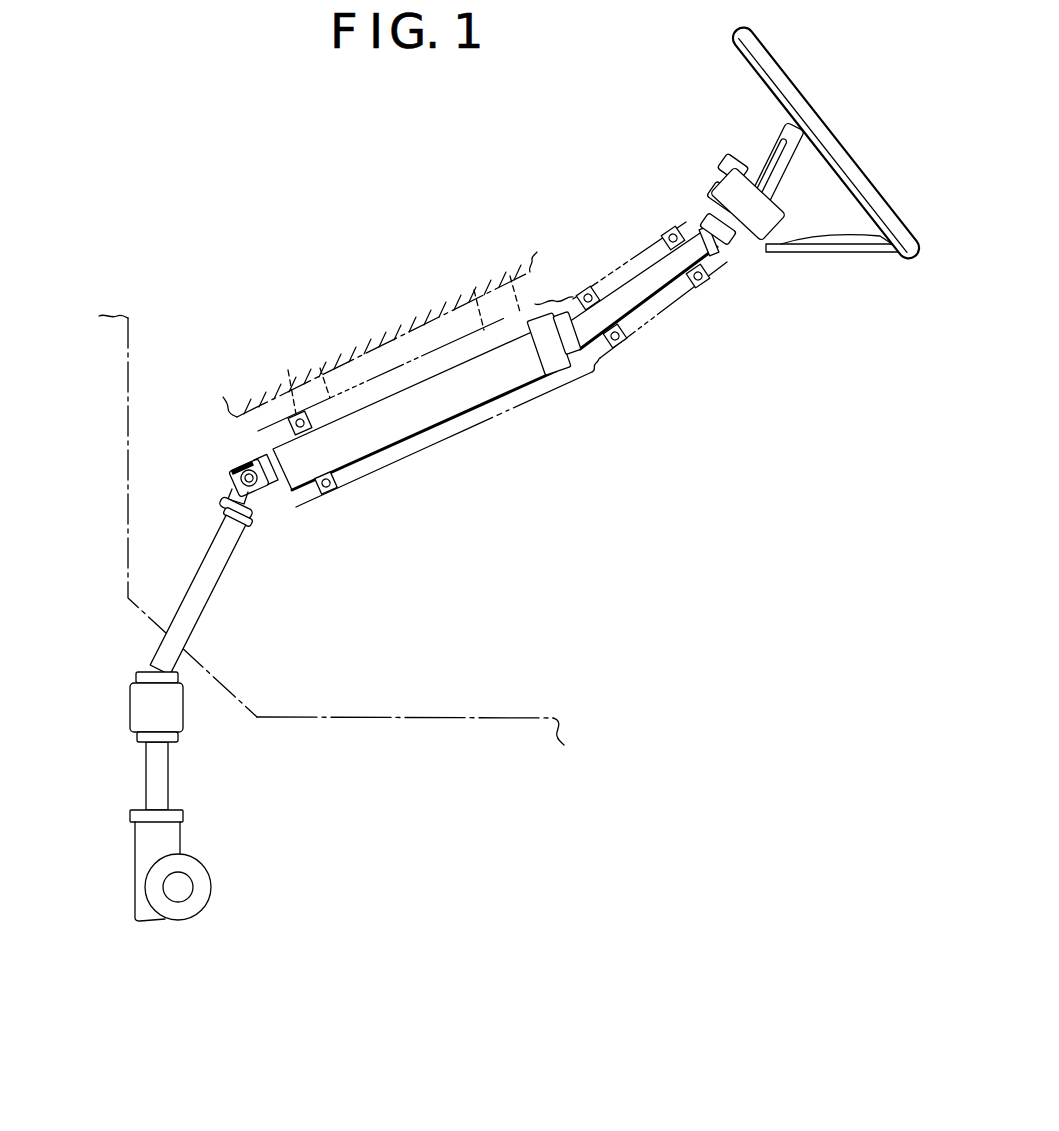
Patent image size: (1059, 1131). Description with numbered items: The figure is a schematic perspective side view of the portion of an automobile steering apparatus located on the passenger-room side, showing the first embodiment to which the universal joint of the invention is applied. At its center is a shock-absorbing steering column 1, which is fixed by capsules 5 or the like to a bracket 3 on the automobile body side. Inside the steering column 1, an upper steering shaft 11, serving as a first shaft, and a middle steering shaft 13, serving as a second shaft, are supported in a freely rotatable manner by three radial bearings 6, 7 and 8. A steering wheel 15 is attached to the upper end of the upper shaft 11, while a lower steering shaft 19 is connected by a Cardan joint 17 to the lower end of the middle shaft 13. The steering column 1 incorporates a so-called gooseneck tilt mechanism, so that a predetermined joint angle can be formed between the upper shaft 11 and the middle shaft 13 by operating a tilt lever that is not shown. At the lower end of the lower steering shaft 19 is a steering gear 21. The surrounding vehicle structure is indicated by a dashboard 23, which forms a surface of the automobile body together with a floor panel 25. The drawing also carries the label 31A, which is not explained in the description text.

The shock-absorbing steering column 1 is at (470, 427).
The bracket 3 is at (407, 332).
The capsules 5 is at (288, 371).
The radial bearing 6 is at (702, 282).
The radial bearing 7 is at (620, 338).
The radial bearing 8 is at (330, 490).
The upper steering shaft 11 is at (652, 268).
The middle steering shaft 13 is at (407, 423).
The steering wheel 15 is at (868, 186).
The Cardan joint 17 is at (235, 477).
The lower steering shaft 19 is at (205, 597).
The steering gear 21 is at (180, 839).
The dashboard 23 is at (128, 478).
The floor panel 25 is at (415, 718).
The collar / energy absorbing member 31A is at (576, 380).